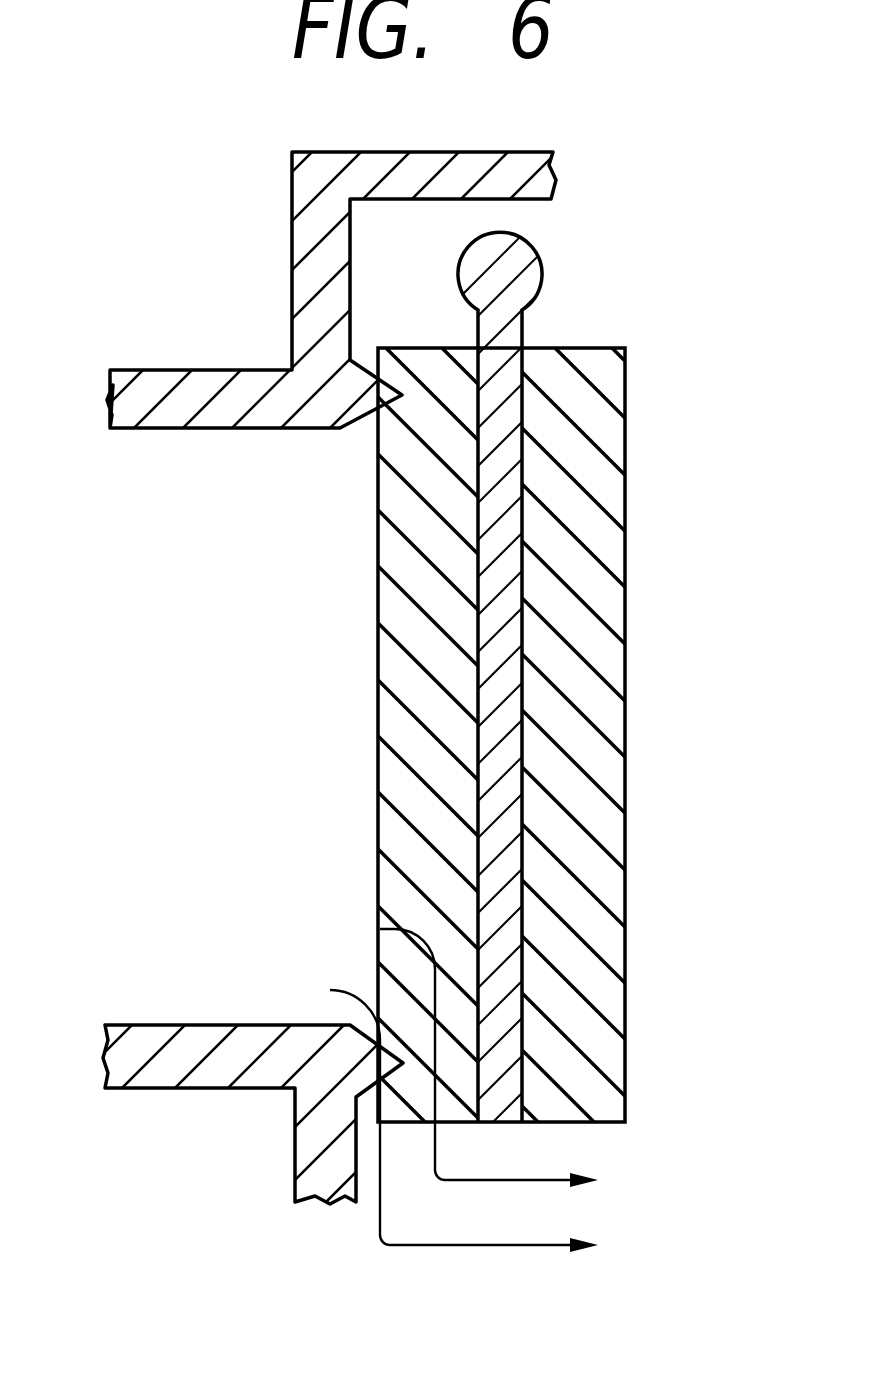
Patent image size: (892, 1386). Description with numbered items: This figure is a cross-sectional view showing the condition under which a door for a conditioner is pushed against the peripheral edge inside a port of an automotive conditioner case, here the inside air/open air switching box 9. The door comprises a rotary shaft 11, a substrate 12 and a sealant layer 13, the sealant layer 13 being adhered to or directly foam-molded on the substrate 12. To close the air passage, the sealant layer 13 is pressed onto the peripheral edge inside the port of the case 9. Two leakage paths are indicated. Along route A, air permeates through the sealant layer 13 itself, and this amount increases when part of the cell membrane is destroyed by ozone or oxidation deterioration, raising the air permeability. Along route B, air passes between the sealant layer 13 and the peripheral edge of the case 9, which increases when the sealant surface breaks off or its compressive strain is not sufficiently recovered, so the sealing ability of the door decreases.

The inside air/open air switching box 9 is at (292, 245).
The rotary shaft 11 is at (215, 718).
The substrate 12 is at (522, 322).
The sealant layer 13 is at (625, 893).
The route A is at (380, 929).
The route B is at (330, 990).